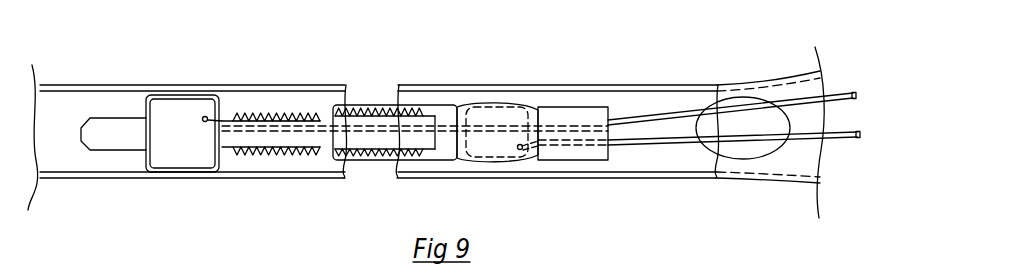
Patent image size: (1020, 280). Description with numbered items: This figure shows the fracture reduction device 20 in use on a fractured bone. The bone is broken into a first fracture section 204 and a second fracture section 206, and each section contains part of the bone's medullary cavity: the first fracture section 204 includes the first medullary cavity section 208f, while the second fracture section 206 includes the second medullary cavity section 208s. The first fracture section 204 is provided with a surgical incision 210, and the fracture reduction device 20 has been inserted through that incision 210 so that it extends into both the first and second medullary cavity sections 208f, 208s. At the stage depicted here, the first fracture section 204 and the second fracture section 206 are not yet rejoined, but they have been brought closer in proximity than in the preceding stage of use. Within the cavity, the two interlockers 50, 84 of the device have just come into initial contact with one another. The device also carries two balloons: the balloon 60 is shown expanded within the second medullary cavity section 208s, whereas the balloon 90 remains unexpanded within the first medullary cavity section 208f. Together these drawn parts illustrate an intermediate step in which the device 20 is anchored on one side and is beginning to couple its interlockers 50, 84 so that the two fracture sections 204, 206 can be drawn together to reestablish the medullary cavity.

The fracture reduction device 20 is at (588, 66).
The interlocker 50 is at (304, 113).
The balloon 60 is at (176, 192).
The interlocker 84 is at (374, 108).
The balloon 90 is at (512, 138).
The first fracture section 204 is at (339, 172).
The second fracture section 206 is at (403, 171).
The second medullary cavity section 208s is at (293, 85).
The first medullary cavity section 208f is at (547, 85).
The surgical incision 210 is at (793, 119).